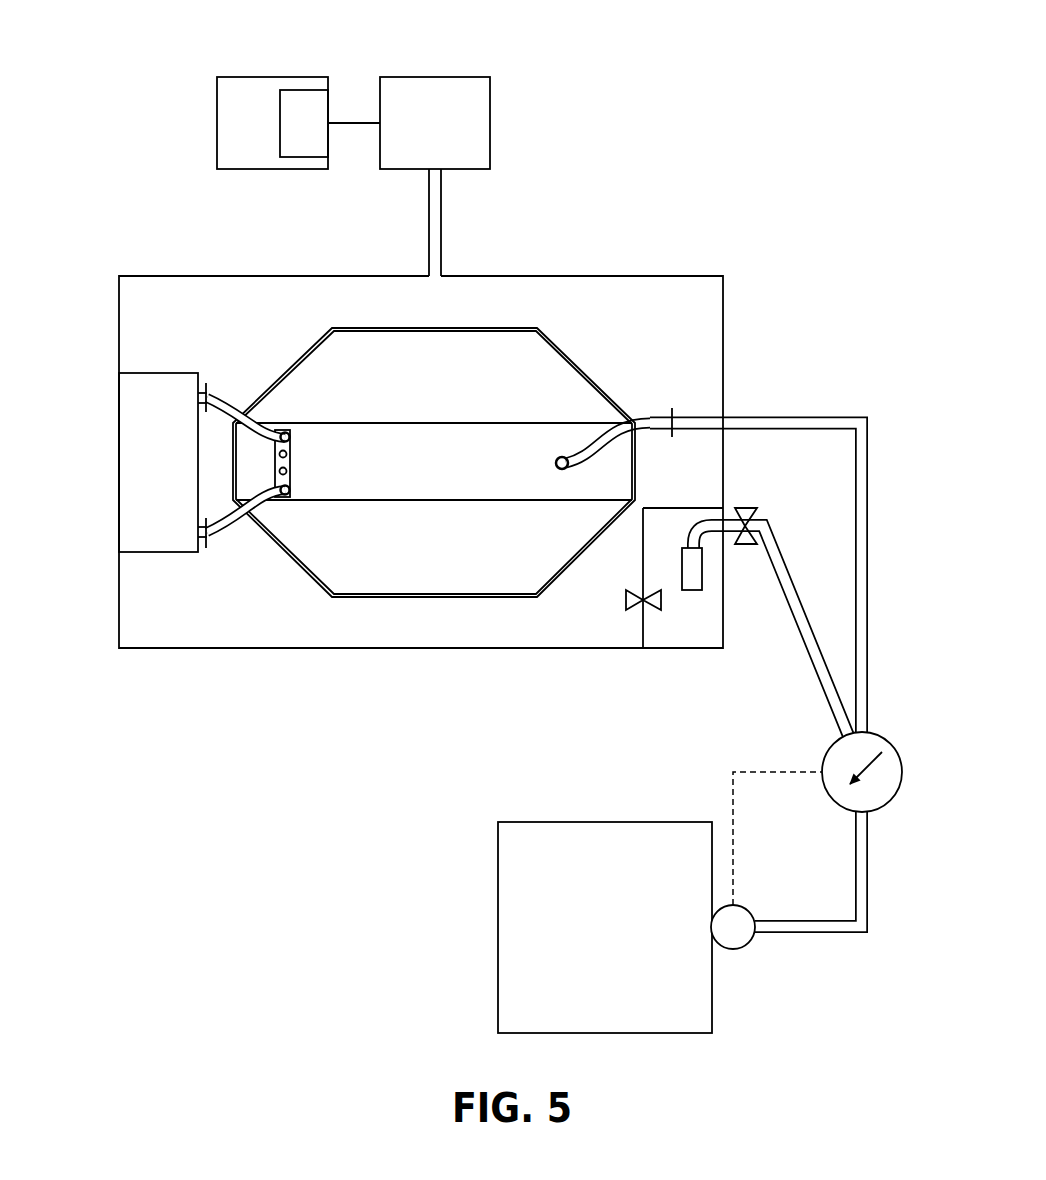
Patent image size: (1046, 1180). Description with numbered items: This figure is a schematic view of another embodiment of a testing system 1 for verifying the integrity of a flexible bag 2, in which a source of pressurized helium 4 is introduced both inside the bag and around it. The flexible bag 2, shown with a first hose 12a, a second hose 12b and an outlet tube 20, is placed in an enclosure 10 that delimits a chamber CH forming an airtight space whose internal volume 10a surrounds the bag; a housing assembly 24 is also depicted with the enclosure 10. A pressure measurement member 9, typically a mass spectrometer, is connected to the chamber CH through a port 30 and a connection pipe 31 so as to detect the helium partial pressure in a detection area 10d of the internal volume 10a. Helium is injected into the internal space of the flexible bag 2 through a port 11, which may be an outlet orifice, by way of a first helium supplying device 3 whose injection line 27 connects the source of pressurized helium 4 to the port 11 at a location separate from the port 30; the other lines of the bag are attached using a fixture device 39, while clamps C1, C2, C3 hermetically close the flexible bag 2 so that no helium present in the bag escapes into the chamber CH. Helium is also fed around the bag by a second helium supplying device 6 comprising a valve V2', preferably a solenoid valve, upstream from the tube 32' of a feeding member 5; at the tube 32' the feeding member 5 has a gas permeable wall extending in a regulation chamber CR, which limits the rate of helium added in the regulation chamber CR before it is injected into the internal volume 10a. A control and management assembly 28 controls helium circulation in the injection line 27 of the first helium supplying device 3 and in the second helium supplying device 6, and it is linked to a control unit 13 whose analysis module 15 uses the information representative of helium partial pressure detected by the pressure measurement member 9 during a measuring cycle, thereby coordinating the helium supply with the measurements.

The testing system 1 is at (112, 243).
The control unit 13 is at (241, 76).
The analysis module 15 is at (304, 90).
The pressure measurement member 9 is at (468, 108).
The port 30 is at (437, 252).
The housing assembly 24 is at (574, 189).
The enclosure 10 is at (177, 650).
The internal volume 10a is at (264, 300).
The detection area 10d is at (416, 300).
The chamber CH is at (651, 307).
The fixture device 39 is at (150, 420).
The clamp C1 is at (207, 393).
The clamp C2 is at (213, 545).
The clamp C3 is at (673, 412).
The flexible bag 2 is at (405, 600).
The first hose 12a is at (287, 497).
The second hose 12b is at (293, 443).
The port 11 is at (560, 470).
The outlet tube 20 is at (653, 430).
The connection pipe 31 is at (740, 405).
The injection line 27 is at (862, 473).
The first helium supplying device 3 is at (873, 517).
The feeding member 5 is at (785, 566).
The valve V2' is at (759, 562).
The regulation chamber CR is at (681, 626).
The tube 32' is at (718, 638).
The second helium supplying device 6 is at (818, 732).
The control and management assembly 28 is at (880, 790).
The source of pressurized helium 4 is at (525, 993).